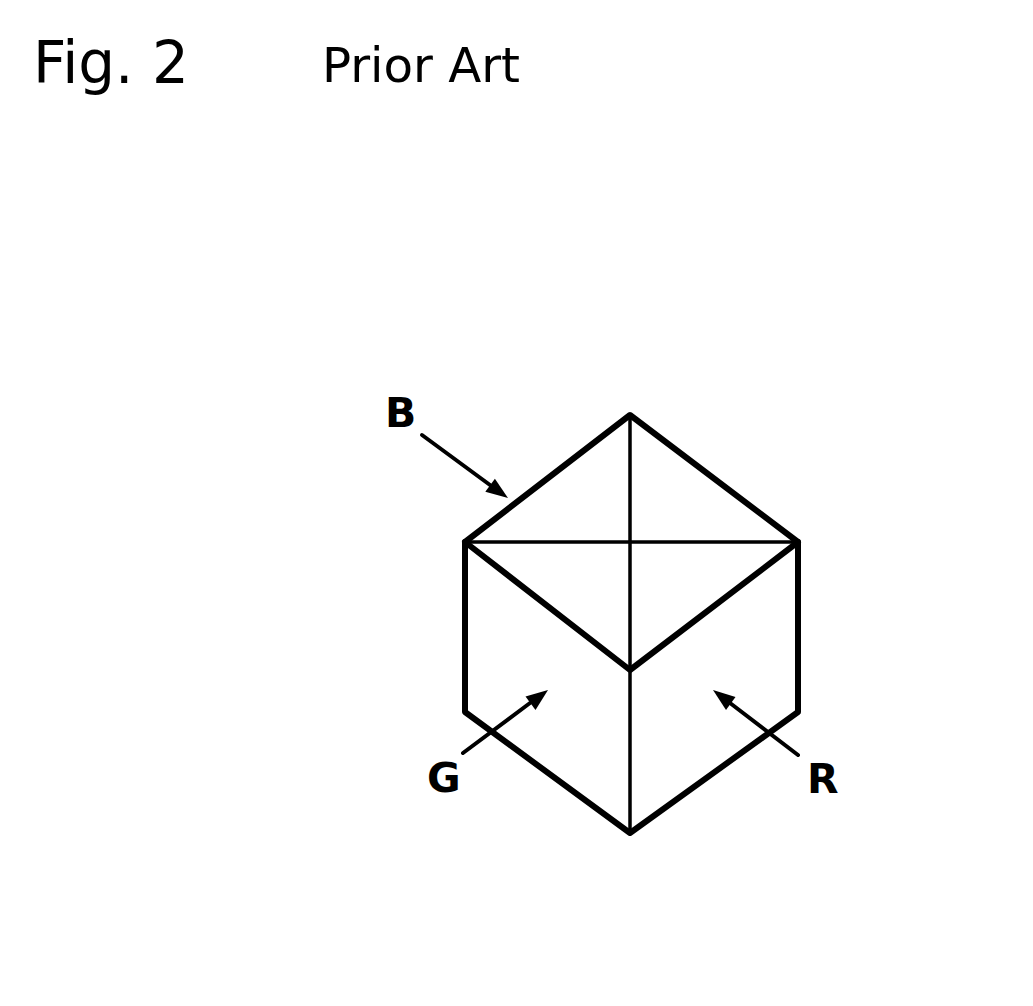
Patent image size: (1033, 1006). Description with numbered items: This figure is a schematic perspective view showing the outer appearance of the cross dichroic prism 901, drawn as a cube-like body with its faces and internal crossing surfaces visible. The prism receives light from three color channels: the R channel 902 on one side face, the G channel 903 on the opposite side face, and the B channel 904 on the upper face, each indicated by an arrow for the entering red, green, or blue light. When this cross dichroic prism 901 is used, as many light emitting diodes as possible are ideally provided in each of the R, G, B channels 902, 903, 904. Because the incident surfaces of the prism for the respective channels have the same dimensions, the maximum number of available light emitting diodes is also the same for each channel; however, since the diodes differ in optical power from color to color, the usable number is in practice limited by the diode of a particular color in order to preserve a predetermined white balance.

The cross dichroic prism 901 is at (762, 430).
The R channel 902 is at (780, 692).
The G channel 903 is at (483, 692).
The B channel 904 is at (608, 430).